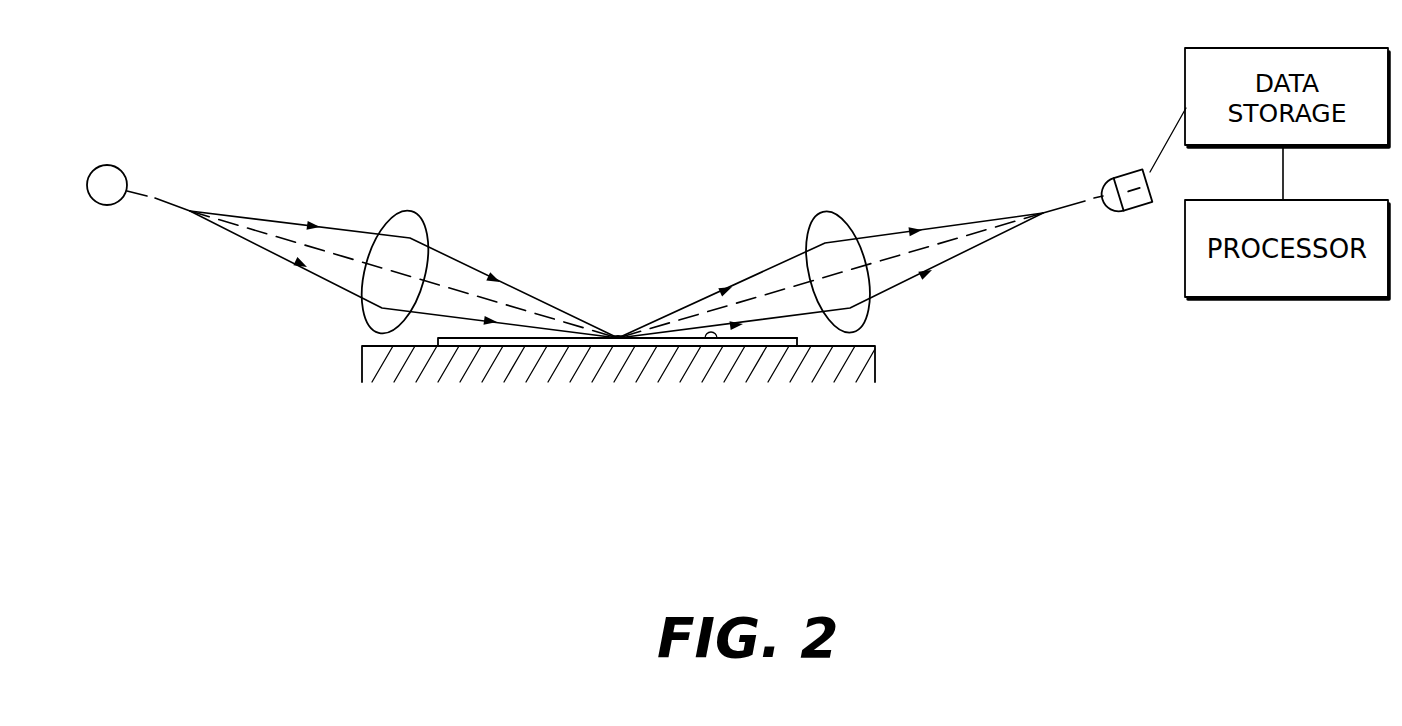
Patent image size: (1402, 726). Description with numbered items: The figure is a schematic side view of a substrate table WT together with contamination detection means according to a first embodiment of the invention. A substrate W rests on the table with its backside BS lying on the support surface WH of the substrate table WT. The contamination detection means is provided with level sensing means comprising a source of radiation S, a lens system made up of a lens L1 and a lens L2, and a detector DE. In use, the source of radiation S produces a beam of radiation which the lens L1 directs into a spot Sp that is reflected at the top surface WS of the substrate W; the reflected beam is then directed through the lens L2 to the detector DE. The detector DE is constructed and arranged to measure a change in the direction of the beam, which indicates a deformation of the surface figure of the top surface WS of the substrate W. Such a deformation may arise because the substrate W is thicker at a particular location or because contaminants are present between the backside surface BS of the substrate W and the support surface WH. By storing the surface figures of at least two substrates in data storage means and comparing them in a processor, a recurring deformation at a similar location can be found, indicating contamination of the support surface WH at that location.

The source of radiation S is at (104, 206).
The lens L1 is at (366, 320).
The lens L2 is at (865, 318).
The spot Sp is at (616, 334).
The substrate table WT is at (398, 367).
The substrate W is at (757, 345).
The top surface WS is at (704, 345).
The backside BS is at (624, 348).
The support surface WH is at (777, 340).
The detector DE is at (1129, 210).